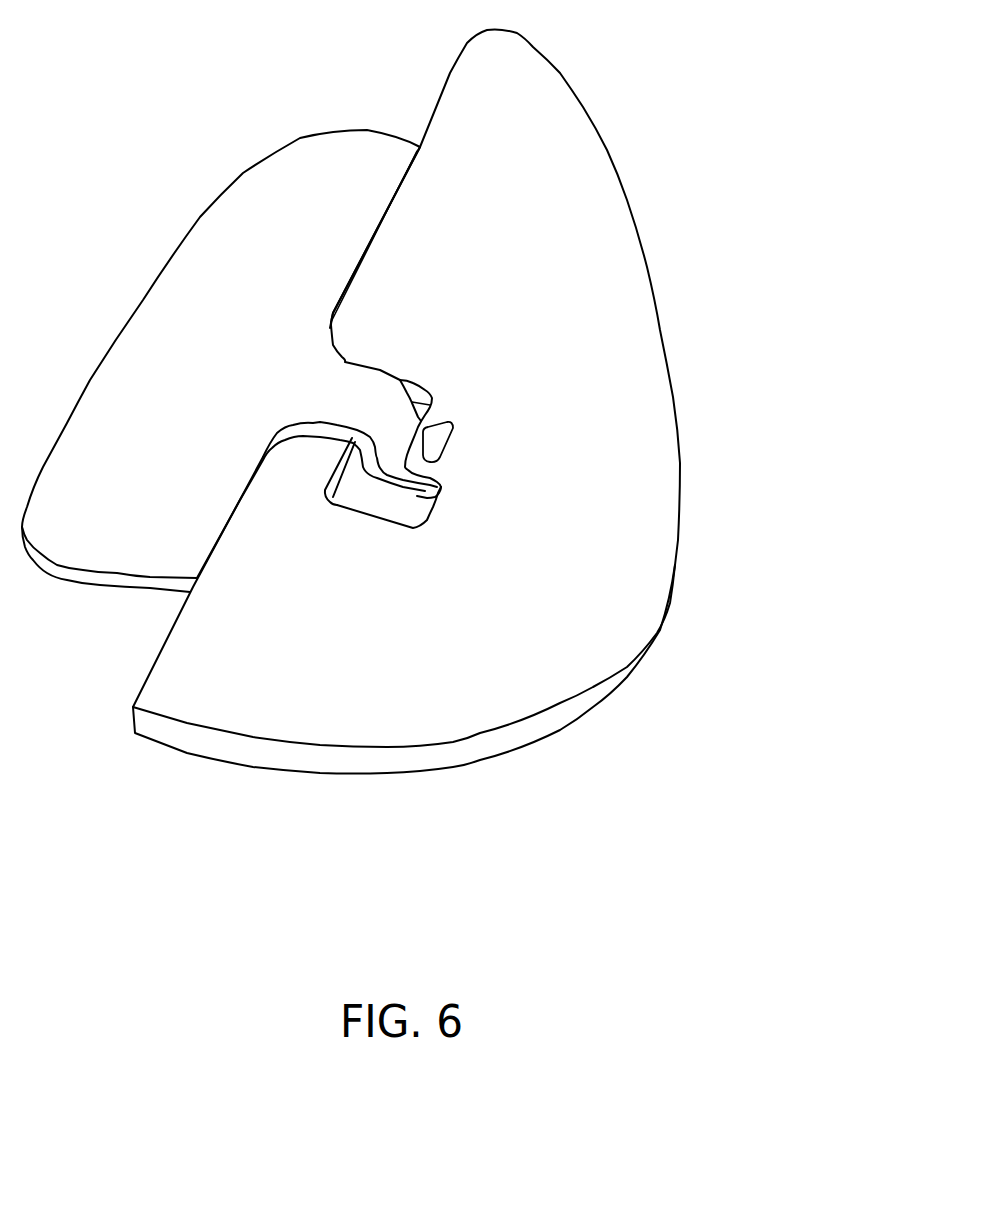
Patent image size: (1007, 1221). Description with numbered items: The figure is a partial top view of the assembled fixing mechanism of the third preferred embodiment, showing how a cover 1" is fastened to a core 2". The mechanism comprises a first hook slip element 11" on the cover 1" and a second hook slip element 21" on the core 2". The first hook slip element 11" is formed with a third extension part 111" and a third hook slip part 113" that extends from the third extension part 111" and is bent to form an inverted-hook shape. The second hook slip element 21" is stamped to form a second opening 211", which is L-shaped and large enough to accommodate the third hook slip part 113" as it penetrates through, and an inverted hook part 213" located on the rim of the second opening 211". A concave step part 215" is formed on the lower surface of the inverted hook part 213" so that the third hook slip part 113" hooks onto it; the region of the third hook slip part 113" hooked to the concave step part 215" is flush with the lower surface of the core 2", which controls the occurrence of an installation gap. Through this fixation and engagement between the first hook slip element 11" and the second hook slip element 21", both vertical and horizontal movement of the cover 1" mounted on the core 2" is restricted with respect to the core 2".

The cover 1 is at (298, 141).
The core 2 is at (610, 701).
The first hook slip element 11 is at (413, 865).
The third extension part 111 is at (352, 405).
The third hook slip part 113 is at (392, 478).
The second hook slip element 21 is at (783, 313).
The second opening 211 is at (410, 508).
The inverted hook part 213 is at (430, 468).
The concave step part 215 is at (452, 425).